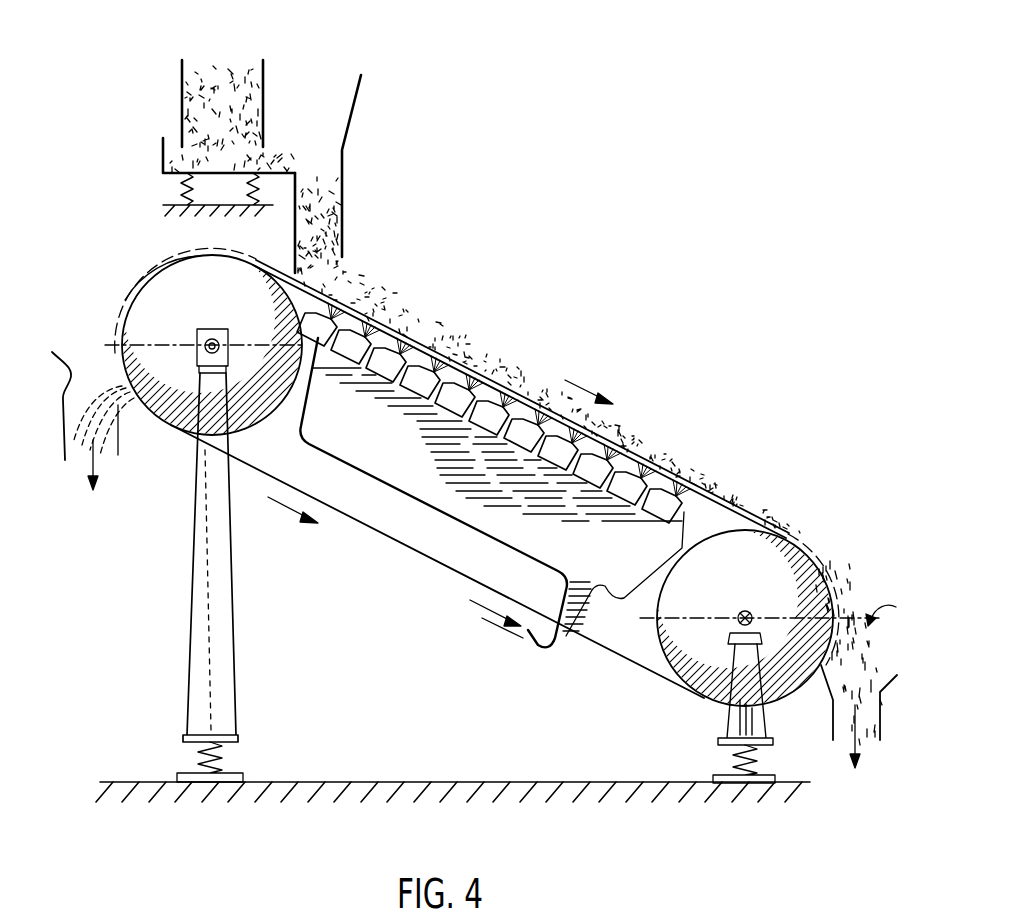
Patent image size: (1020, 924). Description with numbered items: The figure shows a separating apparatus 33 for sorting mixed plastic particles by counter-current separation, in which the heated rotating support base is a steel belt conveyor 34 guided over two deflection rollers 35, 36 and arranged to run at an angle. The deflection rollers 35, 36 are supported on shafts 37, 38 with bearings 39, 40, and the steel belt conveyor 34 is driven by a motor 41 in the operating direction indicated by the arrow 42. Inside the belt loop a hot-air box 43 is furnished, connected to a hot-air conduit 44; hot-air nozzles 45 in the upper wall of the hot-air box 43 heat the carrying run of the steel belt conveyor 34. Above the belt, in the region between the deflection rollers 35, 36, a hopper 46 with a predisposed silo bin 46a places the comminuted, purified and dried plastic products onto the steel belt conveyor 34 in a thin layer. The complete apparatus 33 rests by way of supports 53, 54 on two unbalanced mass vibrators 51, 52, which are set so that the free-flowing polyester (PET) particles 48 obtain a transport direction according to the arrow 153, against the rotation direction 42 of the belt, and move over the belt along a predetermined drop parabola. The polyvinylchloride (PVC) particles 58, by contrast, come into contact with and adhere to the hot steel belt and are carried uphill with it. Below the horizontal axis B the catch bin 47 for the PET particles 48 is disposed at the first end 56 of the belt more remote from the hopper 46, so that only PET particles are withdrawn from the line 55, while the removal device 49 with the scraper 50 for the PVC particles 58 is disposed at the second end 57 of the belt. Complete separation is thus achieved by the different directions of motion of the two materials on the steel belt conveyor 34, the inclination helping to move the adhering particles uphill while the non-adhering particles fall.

The separating apparatus 33 is at (470, 362).
The steel belt conveyor 34 is at (397, 542).
The deflection roller 35 is at (260, 428).
The deflection roller 36 is at (655, 620).
The shaft 37 is at (225, 334).
The shaft 38 is at (745, 610).
The bearing 39 is at (748, 610).
The bearing 40 is at (200, 334).
The motor 41 is at (200, 360).
The arrow (operating/rotation direction) 42 is at (279, 524).
The hot-air box 43 is at (308, 400).
The hot-air conduit 44 is at (528, 636).
The hot-air nozzles 45 is at (530, 442).
The hopper 46 is at (345, 194).
The silo bin 46a is at (268, 120).
The catch bin 47 is at (895, 677).
The polyester (PET) particles 48 is at (836, 594).
The removal device 49 is at (55, 389).
The scraper 50 is at (128, 405).
The unbalanced mass vibrator 51 is at (222, 755).
The unbalanced mass vibrator 52 is at (735, 762).
The support 53 is at (192, 697).
The support 54 is at (725, 728).
The line 55 is at (880, 732).
The first end 56 is at (826, 556).
The second end 57 is at (134, 292).
The polyvinylchloride (PVC) particles 58 is at (208, 256).
The arrow (transport direction) 153 is at (592, 352).
The horizontal axis B is at (889, 607).